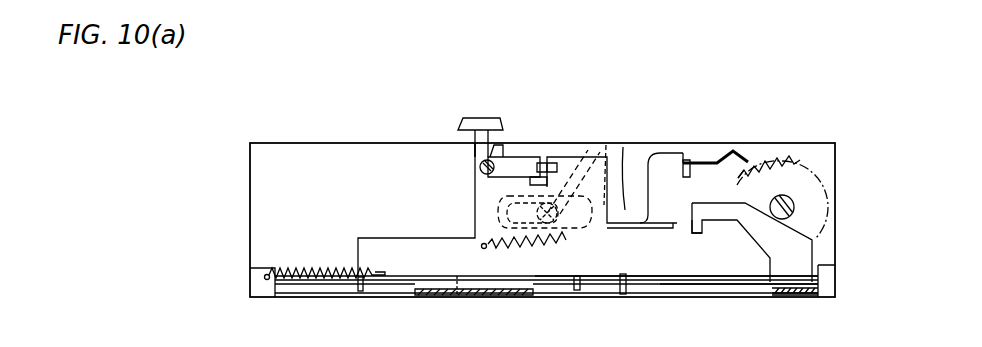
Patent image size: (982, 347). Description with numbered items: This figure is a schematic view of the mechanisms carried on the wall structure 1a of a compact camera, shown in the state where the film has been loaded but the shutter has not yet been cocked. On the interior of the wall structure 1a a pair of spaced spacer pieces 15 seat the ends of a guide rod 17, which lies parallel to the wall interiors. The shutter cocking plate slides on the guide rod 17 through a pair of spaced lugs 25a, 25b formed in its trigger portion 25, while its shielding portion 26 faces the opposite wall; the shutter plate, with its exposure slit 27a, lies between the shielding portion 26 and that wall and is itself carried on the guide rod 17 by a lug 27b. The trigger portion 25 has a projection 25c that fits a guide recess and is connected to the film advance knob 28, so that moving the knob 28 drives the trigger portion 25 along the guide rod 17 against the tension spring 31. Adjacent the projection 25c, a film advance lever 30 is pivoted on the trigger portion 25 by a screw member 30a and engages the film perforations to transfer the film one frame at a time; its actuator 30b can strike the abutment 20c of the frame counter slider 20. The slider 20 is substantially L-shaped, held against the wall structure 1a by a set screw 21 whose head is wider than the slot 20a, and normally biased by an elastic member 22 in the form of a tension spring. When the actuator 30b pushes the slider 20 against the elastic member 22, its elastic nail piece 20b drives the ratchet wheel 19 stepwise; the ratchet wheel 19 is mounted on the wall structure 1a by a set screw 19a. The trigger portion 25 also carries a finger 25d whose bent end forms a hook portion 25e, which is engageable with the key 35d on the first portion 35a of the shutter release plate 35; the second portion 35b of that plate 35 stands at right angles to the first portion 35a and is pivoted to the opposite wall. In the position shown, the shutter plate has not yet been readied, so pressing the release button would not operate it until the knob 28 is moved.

The wall structure 1a is at (251, 196).
The spacer pieces 15 is at (262, 286).
The guide rod 17 is at (740, 290).
The ratchet wheel 19 is at (795, 172).
The set screw 19a is at (790, 200).
The slider 20 is at (643, 225).
The slot 20a is at (612, 171).
The elastic nail piece 20b is at (742, 170).
The abutment 20c is at (722, 160).
The set screw 21 is at (606, 145).
The elastic member 22 is at (528, 238).
The trigger portion 25 is at (390, 238).
The lug 25a is at (578, 290).
The lug 25b is at (360, 291).
The projection 25c is at (476, 143).
The finger 25d is at (688, 160).
The hook portion 25e is at (682, 285).
The shielding portion 26 is at (500, 295).
The exposure slit 27a is at (457, 296).
The lug 27b is at (624, 294).
The film advance knob 28 is at (480, 130).
The film advance lever 30 is at (503, 152).
The screw member 30a is at (480, 166).
The actuator 30b is at (548, 163).
The tension spring 31 is at (300, 278).
The shutter release plate 35 is at (814, 246).
The first portion 35a is at (783, 292).
The second portion 35b is at (815, 296).
The key 35d is at (696, 233).